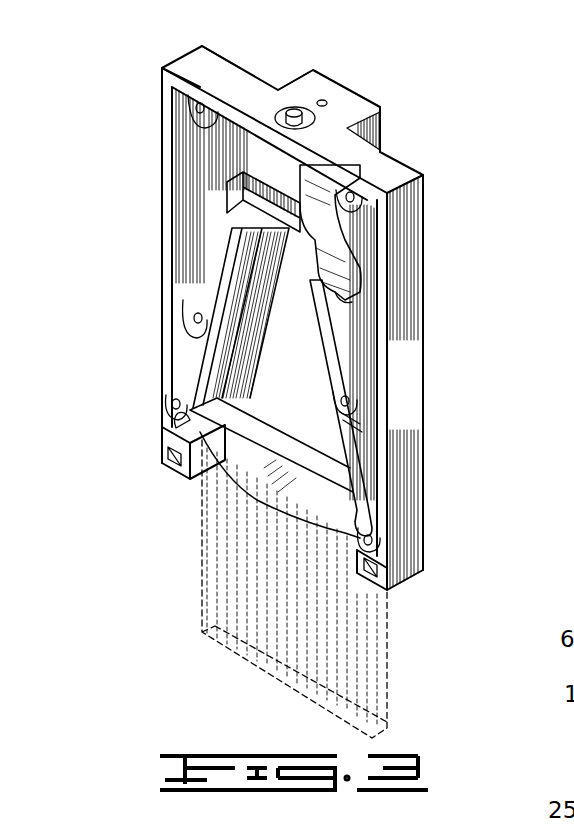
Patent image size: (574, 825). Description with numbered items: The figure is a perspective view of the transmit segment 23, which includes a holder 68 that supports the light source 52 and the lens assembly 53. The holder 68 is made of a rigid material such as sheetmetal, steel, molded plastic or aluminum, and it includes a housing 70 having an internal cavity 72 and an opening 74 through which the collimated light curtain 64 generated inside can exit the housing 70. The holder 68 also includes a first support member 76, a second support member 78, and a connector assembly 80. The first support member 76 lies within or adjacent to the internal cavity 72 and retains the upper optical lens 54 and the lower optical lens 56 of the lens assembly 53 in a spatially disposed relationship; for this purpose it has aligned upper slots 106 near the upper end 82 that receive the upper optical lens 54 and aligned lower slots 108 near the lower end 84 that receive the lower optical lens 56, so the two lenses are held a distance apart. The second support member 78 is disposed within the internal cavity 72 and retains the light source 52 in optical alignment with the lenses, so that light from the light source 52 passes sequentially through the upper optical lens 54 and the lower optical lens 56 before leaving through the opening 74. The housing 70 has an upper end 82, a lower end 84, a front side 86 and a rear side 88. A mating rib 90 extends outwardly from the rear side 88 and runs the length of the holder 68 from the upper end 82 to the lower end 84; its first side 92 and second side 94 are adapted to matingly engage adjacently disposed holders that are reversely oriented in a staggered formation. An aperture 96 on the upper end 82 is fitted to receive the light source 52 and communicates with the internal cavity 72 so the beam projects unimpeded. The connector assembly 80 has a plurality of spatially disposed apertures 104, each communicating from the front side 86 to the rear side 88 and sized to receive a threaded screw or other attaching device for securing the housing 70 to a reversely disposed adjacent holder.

The transmit segment 23 is at (112, 100).
The light source 52 is at (298, 104).
The lens assembly 53 is at (130, 288).
The upper optical lens 54 is at (275, 215).
The lower optical lens 56 is at (252, 455).
The collimated light curtain 64 is at (388, 630).
The holder 68 is at (468, 148).
The housing 70 is at (400, 210).
The internal cavity 72 is at (300, 377).
The opening 74 is at (268, 577).
The first support member 76 is at (330, 305).
The second support member 78 is at (297, 84).
The connector assembly 80 is at (357, 420).
The upper end 82 is at (166, 68).
The lower end 84 is at (170, 463).
The front side 86 is at (161, 82).
The rear side 88 is at (203, 46).
The mating rib 90 is at (345, 97).
The first side 92 is at (373, 132).
The second side 94 is at (292, 108).
The aperture 96 is at (317, 118).
The apertures 104 is at (355, 203).
The upper slots 106 is at (240, 230).
The lower slots 108 is at (172, 428).